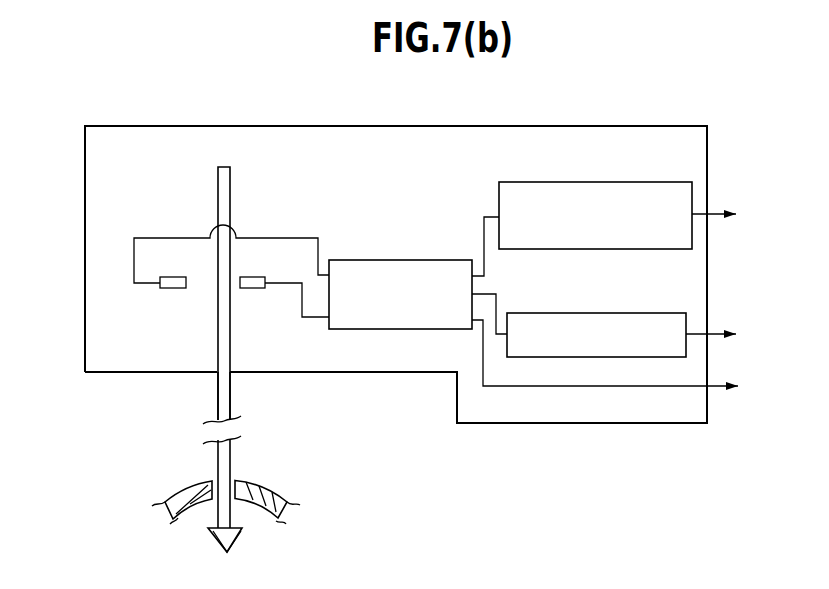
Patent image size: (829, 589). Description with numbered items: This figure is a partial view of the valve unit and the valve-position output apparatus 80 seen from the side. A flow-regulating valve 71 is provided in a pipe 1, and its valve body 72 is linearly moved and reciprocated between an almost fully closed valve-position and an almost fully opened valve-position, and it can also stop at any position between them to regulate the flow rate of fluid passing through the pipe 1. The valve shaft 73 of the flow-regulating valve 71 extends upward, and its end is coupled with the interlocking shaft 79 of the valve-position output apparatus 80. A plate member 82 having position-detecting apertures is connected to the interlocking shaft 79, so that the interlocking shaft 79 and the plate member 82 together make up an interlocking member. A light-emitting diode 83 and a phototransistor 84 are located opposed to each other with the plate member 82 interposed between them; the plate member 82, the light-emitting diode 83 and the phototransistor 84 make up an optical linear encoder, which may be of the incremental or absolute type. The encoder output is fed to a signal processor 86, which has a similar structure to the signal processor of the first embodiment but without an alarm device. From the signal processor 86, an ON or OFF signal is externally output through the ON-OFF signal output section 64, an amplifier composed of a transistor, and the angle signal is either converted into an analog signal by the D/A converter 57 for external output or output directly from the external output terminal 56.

The valve-position output apparatus 80 is at (396, 261).
The plate member 82 is at (231, 193).
The light-emitting diode 83 is at (170, 290).
The phototransistor 84 is at (259, 290).
The signal processor 86 is at (400, 283).
The ON-OFF signal output section 64 is at (604, 217).
The D/A converter 57 is at (604, 323).
The external output terminal 56 is at (709, 388).
The interlocking shaft 79 is at (218, 400).
The valve shaft 73 is at (220, 458).
The pipe 1 is at (263, 492).
The flow-regulating valve 71 is at (240, 537).
The valve body 72 is at (214, 535).